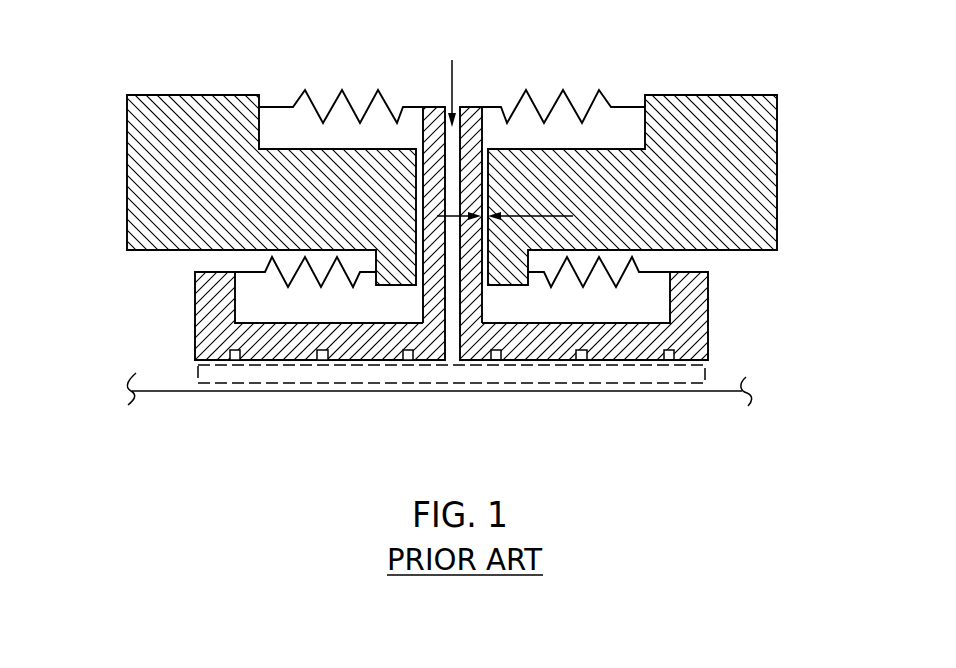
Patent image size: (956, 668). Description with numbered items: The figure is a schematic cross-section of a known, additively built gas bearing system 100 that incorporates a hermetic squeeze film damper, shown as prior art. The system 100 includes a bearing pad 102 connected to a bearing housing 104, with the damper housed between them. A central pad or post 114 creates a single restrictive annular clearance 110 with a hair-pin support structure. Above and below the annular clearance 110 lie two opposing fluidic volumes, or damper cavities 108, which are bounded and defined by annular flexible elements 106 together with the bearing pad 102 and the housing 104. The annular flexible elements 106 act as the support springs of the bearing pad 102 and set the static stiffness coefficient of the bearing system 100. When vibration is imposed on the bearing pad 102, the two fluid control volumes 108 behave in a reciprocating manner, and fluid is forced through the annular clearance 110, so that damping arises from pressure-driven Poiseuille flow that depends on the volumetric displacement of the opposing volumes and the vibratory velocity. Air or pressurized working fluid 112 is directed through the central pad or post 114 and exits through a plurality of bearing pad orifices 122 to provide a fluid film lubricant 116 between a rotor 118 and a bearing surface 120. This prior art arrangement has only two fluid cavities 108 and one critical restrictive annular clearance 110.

The gas bearing system 100 is at (143, 65).
The bearing pad 102 is at (708, 302).
The bearing housing 104 is at (777, 140).
The annular flexible elements 106 is at (327, 107).
The damper cavities 108 is at (622, 123).
The annular clearance 110 is at (520, 217).
The pressurized working fluid 112 is at (450, 82).
The central pad or post 114 is at (497, 112).
The fluid film lubricant 116 is at (252, 373).
The rotor 118 is at (178, 391).
The bearing surface 120 is at (687, 360).
The bearing pad orifices 122 is at (328, 358).